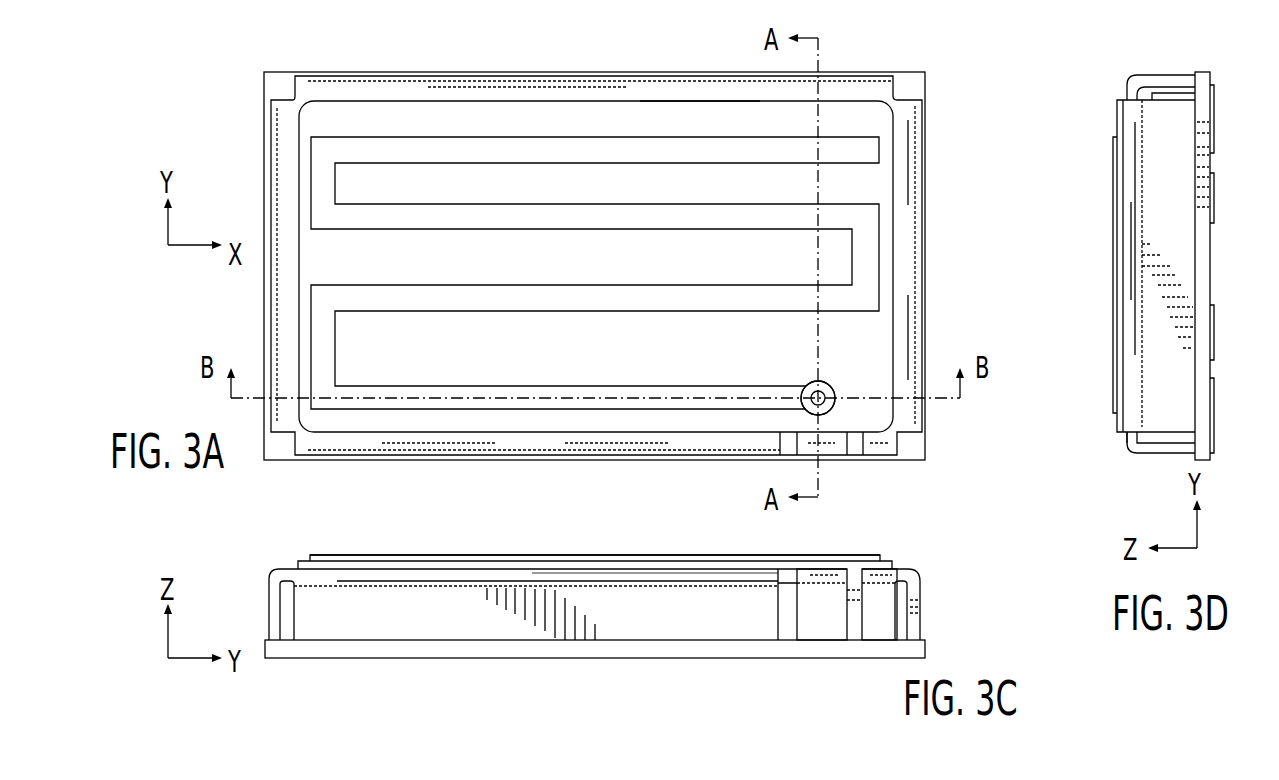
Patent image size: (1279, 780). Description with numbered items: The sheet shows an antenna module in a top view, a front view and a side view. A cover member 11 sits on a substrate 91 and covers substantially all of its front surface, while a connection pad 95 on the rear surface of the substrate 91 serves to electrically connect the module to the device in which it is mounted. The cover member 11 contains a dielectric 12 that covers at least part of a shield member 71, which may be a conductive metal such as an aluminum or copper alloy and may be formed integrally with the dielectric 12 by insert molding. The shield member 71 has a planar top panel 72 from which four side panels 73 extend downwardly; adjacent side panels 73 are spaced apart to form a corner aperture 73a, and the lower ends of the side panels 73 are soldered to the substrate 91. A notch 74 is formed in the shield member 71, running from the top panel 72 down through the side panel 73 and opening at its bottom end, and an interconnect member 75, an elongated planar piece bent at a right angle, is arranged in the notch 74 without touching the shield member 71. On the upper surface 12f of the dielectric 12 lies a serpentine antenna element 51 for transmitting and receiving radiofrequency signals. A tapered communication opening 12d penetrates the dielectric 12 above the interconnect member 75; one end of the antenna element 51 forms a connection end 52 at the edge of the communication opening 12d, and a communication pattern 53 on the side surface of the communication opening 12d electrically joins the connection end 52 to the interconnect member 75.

In FIG. 3A, the cover member 11 is at (378, 90).
In FIG. 3A, the dielectric 12 is at (305, 263).
In FIG. 3D, the dielectric 12 is at (1117, 118).
In FIG. 3A, the communication opening 12d is at (832, 384).
In FIG. 3A, the upper surface 12f is at (686, 122).
In FIG. 3A, the antenna element 51 is at (604, 152).
In FIG. 3C, the antenna element 51 is at (447, 557).
In FIG. 3D, the antenna element 51 is at (1117, 226).
In FIG. 3A, the connection end 52 is at (803, 392).
In FIG. 3A, the communication pattern 53 is at (821, 414).
In FIG. 3A, the shield member 71 is at (284, 173).
In FIG. 3A, the top panel 72 is at (909, 250).
In FIG. 3D, the top panel 72 is at (1125, 436).
In FIG. 3C, the side panel 73 is at (498, 615).
In FIG. 3D, the side panel 73 is at (1178, 244).
In FIG. 3C, the corner aperture 73a is at (289, 633).
In FIG. 3C, the notch 74 is at (788, 582).
In FIG. 3C, the interconnect member 75 is at (823, 617).
In FIG. 3A, the substrate 91 is at (284, 451).
In FIG. 3C, the substrate 91 is at (268, 640).
In FIG. 3D, the substrate 91 is at (1205, 71).
In FIG. 3C, the connection pad 95 is at (672, 659).
In FIG. 3D, the connection pad 95 is at (1213, 210).